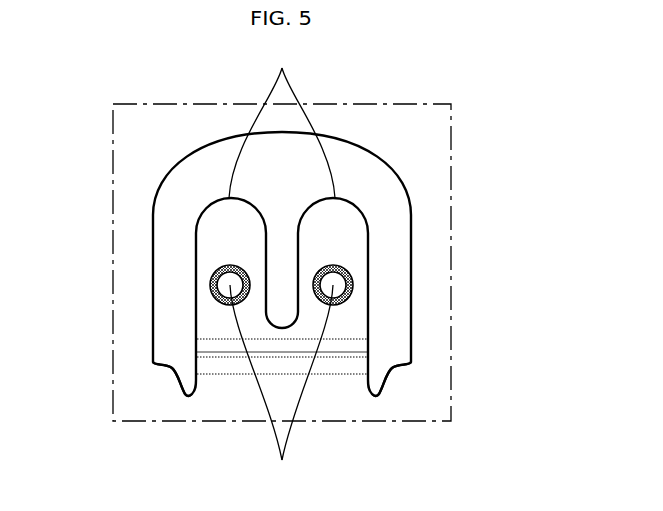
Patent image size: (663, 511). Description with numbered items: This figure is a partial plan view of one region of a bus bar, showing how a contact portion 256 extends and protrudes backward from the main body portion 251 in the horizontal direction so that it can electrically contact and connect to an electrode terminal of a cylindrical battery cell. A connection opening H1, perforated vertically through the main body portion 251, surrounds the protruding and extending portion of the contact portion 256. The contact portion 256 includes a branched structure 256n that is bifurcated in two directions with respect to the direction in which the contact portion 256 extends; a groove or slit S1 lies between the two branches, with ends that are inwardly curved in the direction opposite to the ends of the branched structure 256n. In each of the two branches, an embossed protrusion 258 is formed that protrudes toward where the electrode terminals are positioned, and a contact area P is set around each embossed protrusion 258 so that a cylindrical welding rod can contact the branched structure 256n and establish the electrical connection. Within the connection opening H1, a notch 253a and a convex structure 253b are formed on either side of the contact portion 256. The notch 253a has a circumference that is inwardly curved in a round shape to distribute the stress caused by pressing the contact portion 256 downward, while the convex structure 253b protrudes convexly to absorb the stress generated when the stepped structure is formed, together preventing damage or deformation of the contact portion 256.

The main body portion 251 is at (430, 162).
The branched structure 256n is at (282, 120).
The slit S1 is at (284, 251).
The connection opening H1 is at (172, 298).
The contact area P is at (232, 262).
The contact portion 256 is at (213, 343).
The convex structure 253b is at (165, 367).
The notch 253a is at (182, 387).
The embossed protrusion 258 is at (281, 387).